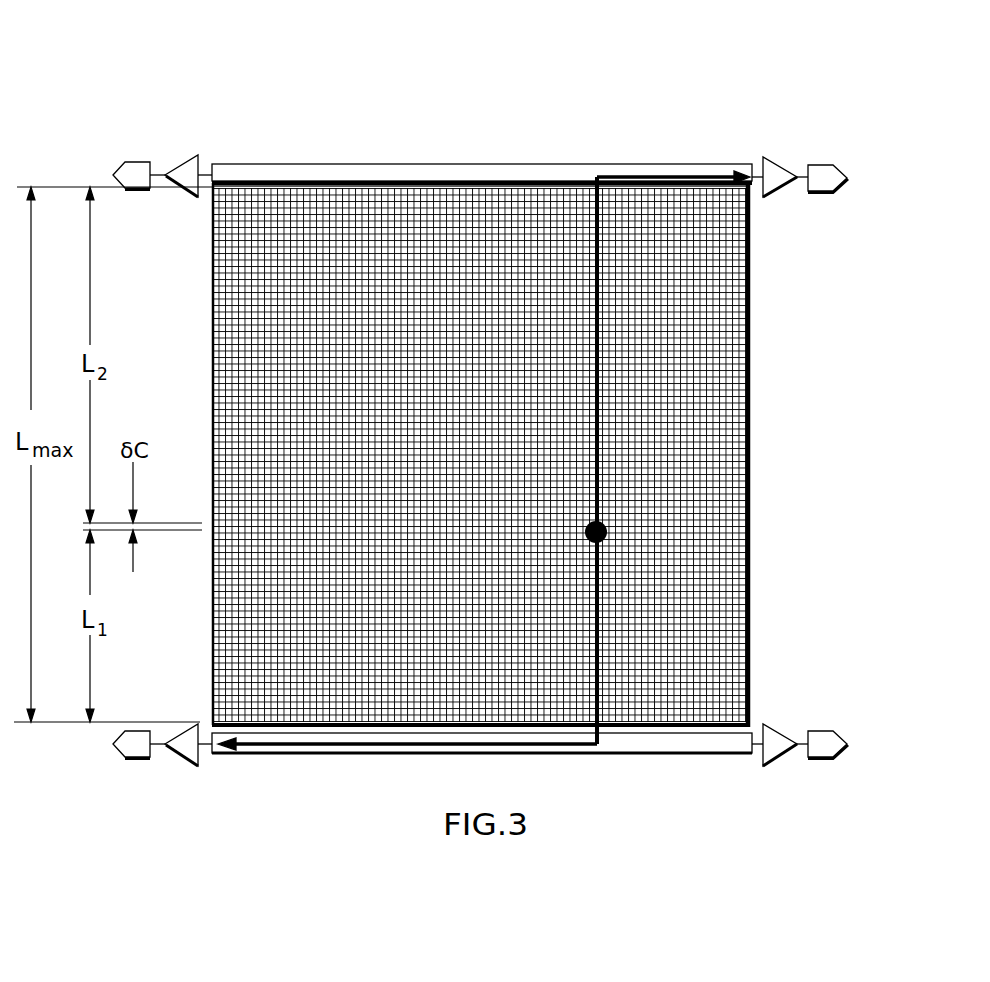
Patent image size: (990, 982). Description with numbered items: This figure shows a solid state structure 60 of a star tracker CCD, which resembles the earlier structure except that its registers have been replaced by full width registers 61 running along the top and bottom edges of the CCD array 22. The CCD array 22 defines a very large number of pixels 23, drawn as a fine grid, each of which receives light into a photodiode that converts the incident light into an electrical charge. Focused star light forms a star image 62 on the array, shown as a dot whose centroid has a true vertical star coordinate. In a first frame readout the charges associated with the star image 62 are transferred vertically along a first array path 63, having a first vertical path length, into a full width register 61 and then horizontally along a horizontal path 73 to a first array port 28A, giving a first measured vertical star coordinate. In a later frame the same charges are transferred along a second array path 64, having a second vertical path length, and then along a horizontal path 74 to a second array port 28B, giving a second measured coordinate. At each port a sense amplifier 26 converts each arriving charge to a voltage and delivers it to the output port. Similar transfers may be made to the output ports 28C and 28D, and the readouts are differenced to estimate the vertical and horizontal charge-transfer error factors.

The solid state structure 60 is at (880, 160).
The CCD array 22 is at (762, 389).
The pixels 23 is at (708, 606).
The sense amplifier 26 is at (782, 757).
The first array port 28A is at (141, 771).
The second array port 28B is at (829, 208).
The output port 28C is at (828, 719).
The output port 28D is at (138, 152).
The full width registers 61 is at (677, 757).
The star image 62 is at (617, 521).
The first array path 63 is at (598, 638).
The second array path 64 is at (598, 354).
The horizontal path 73 is at (407, 744).
The horizontal path 74 is at (673, 180).